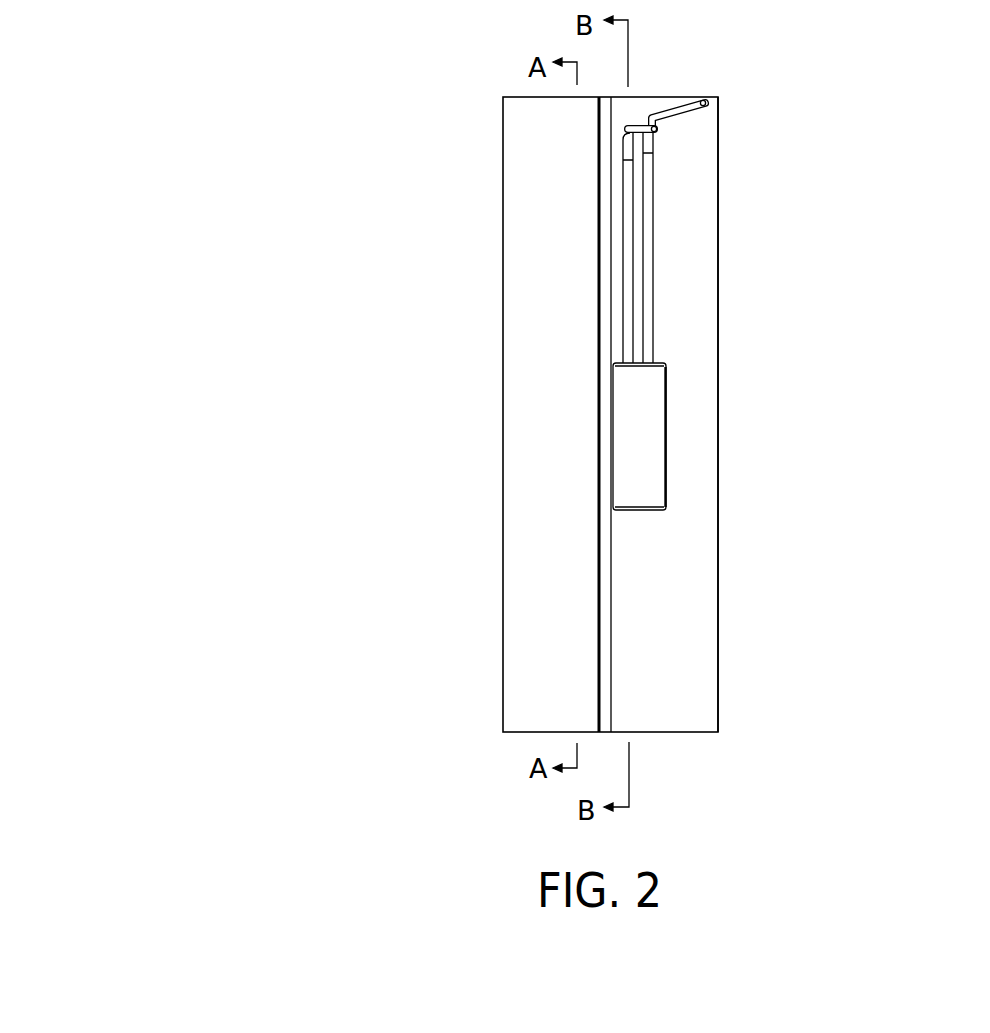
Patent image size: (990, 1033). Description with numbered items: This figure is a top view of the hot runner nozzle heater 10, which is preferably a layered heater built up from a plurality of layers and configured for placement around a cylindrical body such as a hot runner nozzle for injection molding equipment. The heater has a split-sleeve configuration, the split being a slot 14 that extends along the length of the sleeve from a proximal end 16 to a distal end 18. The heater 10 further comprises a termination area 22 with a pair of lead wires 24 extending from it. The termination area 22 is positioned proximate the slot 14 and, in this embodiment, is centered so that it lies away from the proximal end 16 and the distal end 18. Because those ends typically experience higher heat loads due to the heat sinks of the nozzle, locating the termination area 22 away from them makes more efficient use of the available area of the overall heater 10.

The hot runner nozzle heater 10 is at (342, 250).
The slot 14 is at (607, 450).
The proximal end 16 is at (731, 712).
The distal end 18 is at (731, 112).
The termination area 22 is at (652, 412).
The lead wires 24 is at (627, 275).